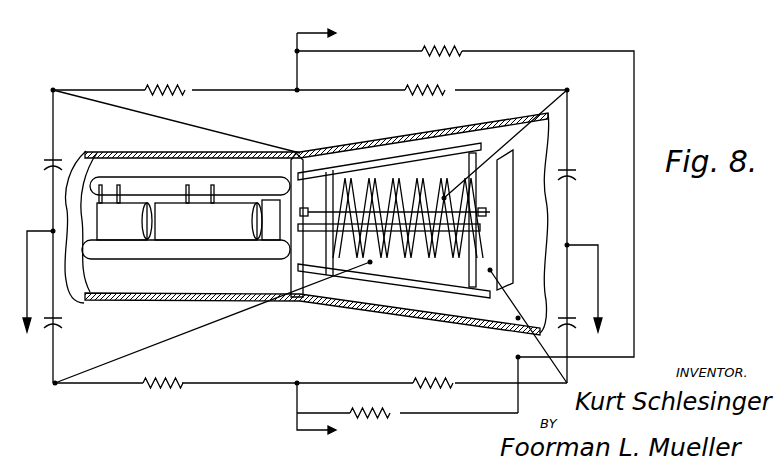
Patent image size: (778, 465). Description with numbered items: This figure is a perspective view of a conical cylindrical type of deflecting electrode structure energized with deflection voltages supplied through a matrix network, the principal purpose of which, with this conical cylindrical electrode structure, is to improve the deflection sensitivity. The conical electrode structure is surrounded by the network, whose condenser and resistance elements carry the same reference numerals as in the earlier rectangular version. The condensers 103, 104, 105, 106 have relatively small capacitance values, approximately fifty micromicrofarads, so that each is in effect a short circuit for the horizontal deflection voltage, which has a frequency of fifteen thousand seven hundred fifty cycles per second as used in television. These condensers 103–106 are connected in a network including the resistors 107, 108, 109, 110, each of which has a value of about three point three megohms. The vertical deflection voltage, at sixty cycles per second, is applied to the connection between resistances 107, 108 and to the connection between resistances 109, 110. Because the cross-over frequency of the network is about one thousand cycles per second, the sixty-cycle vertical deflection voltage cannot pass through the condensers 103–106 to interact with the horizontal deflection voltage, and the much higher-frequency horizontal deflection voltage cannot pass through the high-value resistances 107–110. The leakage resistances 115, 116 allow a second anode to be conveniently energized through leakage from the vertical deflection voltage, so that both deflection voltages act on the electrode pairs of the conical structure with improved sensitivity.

The condenser 103 is at (572, 172).
The condenser 104 is at (574, 326).
The condenser 105 is at (62, 326).
The condenser 106 is at (50, 160).
The resistor 107 is at (160, 390).
The resistor 108 is at (432, 377).
The resistor 109 is at (415, 93).
The resistor 110 is at (168, 89).
The leakage resistance 115 is at (438, 49).
The leakage resistance 116 is at (377, 420).